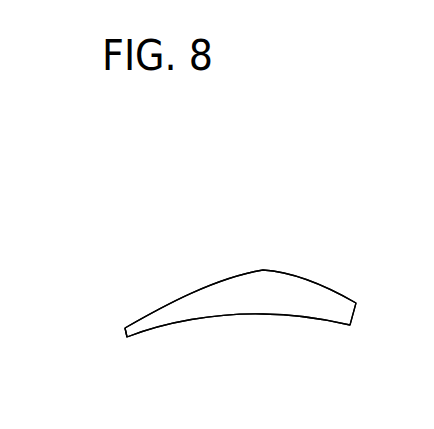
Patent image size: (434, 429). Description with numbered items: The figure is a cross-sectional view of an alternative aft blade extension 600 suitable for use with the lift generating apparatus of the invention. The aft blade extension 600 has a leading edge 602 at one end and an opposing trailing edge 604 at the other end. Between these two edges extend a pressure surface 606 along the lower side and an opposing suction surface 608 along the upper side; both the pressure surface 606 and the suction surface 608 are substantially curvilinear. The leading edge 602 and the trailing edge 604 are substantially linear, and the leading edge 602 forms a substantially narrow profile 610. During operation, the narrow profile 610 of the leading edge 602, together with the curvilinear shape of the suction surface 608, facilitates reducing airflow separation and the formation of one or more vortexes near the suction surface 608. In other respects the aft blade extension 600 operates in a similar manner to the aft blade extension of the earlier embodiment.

The aft blade extension 600 is at (158, 210).
The leading edge 602 is at (127, 337).
The trailing edge 604 is at (357, 312).
The pressure surface 606 is at (237, 315).
The suction surface 608 is at (263, 270).
The narrow profile 610 is at (115, 325).